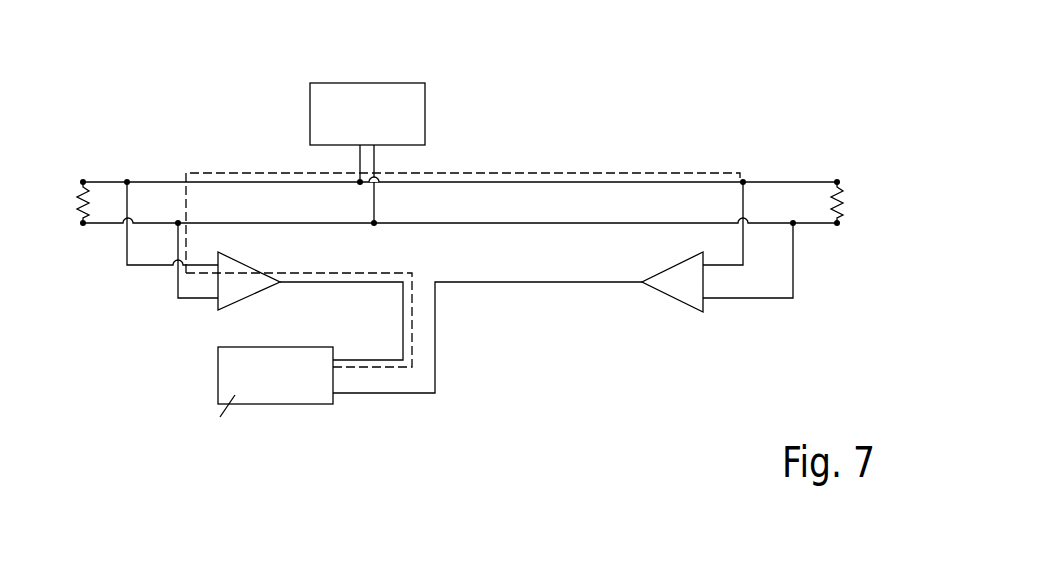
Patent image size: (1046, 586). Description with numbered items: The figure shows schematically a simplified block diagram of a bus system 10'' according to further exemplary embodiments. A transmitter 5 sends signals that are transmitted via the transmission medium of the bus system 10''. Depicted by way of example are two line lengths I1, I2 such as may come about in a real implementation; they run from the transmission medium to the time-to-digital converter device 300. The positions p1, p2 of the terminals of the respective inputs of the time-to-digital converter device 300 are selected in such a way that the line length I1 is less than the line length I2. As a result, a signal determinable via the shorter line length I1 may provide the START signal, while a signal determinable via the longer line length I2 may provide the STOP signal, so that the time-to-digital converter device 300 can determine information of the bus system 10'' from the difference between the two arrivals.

The bus system 10'' is at (460, 124).
The position of terminal p1 is at (128, 142).
The position of terminal p2 is at (743, 141).
The transmitter 5 is at (360, 128).
The line length I1 is at (597, 171).
The line length I2 is at (537, 283).
The time-to-digital converter device 300 is at (296, 391).